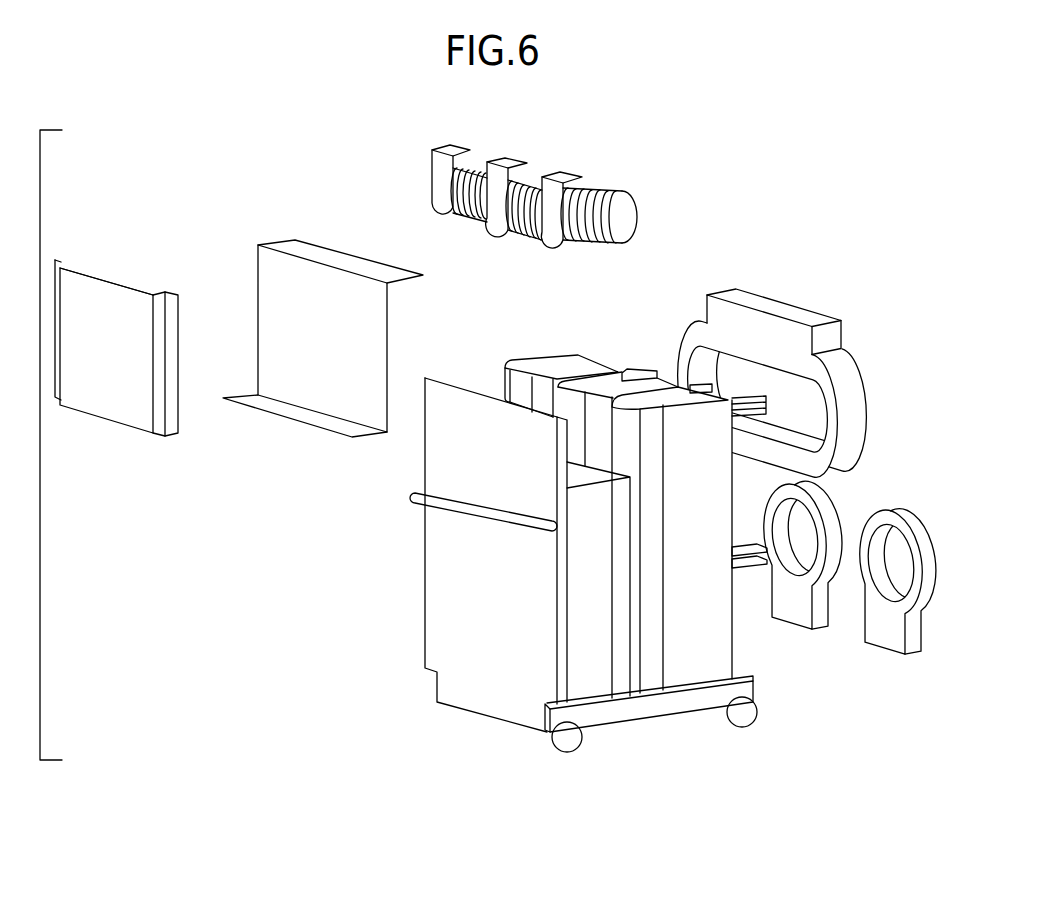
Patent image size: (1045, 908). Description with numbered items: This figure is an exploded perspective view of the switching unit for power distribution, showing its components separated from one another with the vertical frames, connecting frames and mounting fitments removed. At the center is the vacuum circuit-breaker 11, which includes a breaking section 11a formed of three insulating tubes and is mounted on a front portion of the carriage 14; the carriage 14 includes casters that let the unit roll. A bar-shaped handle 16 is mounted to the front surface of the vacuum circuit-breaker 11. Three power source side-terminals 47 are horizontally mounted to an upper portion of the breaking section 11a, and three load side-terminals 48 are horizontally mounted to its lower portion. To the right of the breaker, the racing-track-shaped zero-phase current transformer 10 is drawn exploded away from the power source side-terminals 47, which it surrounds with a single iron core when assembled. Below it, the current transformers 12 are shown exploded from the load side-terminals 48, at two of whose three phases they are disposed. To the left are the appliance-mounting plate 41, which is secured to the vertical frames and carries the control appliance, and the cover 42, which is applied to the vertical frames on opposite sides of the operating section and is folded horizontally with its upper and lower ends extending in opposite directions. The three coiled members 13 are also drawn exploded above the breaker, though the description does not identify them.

The zero-phase current transformer 10 is at (862, 402).
The vacuum circuit-breaker 11 is at (428, 597).
The breaking section 11a is at (548, 367).
The current transformers 12 is at (802, 622).
The coil springs 13 is at (600, 240).
The carriage 14 is at (662, 718).
The handle 16 is at (477, 518).
The appliance-mounting plate 41 is at (176, 330).
The cover 42 is at (375, 345).
The power source side-terminals 47 is at (642, 370).
The load side-terminals 48 is at (747, 570).